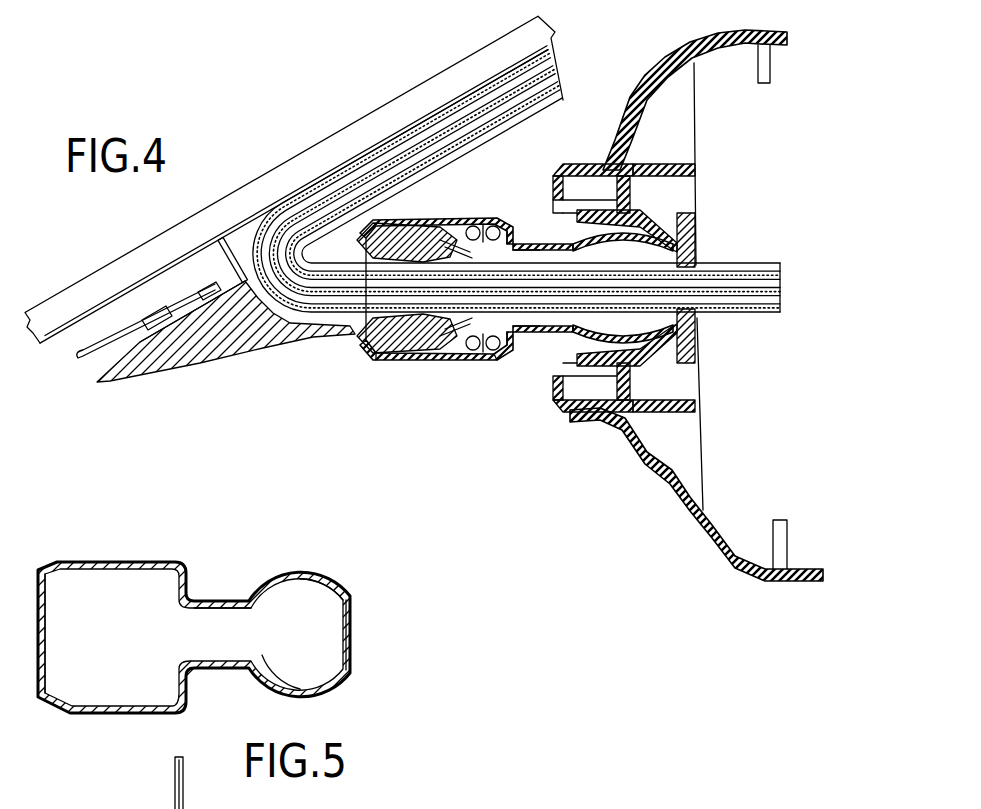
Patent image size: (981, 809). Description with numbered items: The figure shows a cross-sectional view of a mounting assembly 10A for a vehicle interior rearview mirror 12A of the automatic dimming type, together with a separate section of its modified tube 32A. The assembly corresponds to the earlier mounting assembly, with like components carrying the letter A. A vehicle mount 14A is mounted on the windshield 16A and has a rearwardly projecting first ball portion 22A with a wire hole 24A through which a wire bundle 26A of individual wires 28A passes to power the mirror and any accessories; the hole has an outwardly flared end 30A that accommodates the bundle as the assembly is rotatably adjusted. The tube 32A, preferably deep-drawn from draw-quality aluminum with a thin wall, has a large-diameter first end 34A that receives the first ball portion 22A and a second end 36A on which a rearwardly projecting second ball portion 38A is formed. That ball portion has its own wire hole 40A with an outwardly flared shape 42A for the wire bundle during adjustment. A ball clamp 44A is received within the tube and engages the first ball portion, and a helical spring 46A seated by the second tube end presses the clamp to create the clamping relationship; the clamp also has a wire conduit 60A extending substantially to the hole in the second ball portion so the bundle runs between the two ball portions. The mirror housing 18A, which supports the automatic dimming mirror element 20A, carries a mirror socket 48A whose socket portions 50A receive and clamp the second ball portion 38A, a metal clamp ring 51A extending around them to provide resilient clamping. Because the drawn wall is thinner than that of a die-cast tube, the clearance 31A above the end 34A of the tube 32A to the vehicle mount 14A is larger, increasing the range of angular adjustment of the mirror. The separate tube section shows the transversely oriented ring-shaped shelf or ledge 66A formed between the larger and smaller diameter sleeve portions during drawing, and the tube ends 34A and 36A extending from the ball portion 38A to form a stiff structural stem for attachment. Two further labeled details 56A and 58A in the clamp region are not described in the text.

In FIG. 4, the mounting assembly 10A is at (425, 432).
In FIG. 4, the vehicle interior rearview mirror 12A is at (658, 504).
In FIG. 4, the vehicle mount 14A is at (197, 357).
In FIG. 4, the windshield 16A is at (193, 220).
In FIG. 4, the housing 18A is at (637, 94).
In FIG. 4, the automatic dimming mirror element 20A is at (773, 80).
In FIG. 4, the first ball portion 22A is at (360, 353).
In FIG. 4, the wire hole 24A is at (303, 190).
In FIG. 4, the wire bundle 26A is at (430, 100).
In FIG. 4, the wires 28A is at (507, 88).
In FIG. 4, the outwardly flared end 30A is at (490, 220).
In FIG. 4, the clearance 31A is at (390, 227).
In FIG. 4, the tube 32A is at (485, 372).
In FIG. 5, the tube 32A is at (167, 536).
In FIG. 4, the first end 34A is at (393, 368).
In FIG. 5, the first end 34A is at (57, 717).
In FIG. 4, the second end 36A is at (530, 373).
In FIG. 5, the second end 36A is at (230, 680).
In FIG. 4, the second ball portion 38A is at (663, 253).
In FIG. 5, the second ball portion 38A is at (303, 700).
In FIG. 4, the wire hole 40A is at (697, 267).
In FIG. 5, the wire hole 40A is at (353, 647).
In FIG. 4, the outwardly flared shape 42A is at (682, 320).
In FIG. 5, the outwardly flared shape 42A is at (353, 607).
In FIG. 4, the ball clamp 44A is at (430, 363).
In FIG. 4, the helical spring 46A is at (477, 367).
In FIG. 4, the mirror socket 48A is at (686, 155).
In FIG. 4, the socket portions 50A is at (610, 200).
In FIG. 4, the metal clamp ring 51A is at (568, 213).
In FIG. 4, the contact spring 56A is at (440, 233).
In FIG. 4, the strain relief body 58A is at (363, 230).
In FIG. 4, the wire conduit 60A is at (497, 367).
In FIG. 5, the wire conduit 60A is at (225, 808).
In FIG. 5, the ring-shaped shelf 66A is at (198, 702).